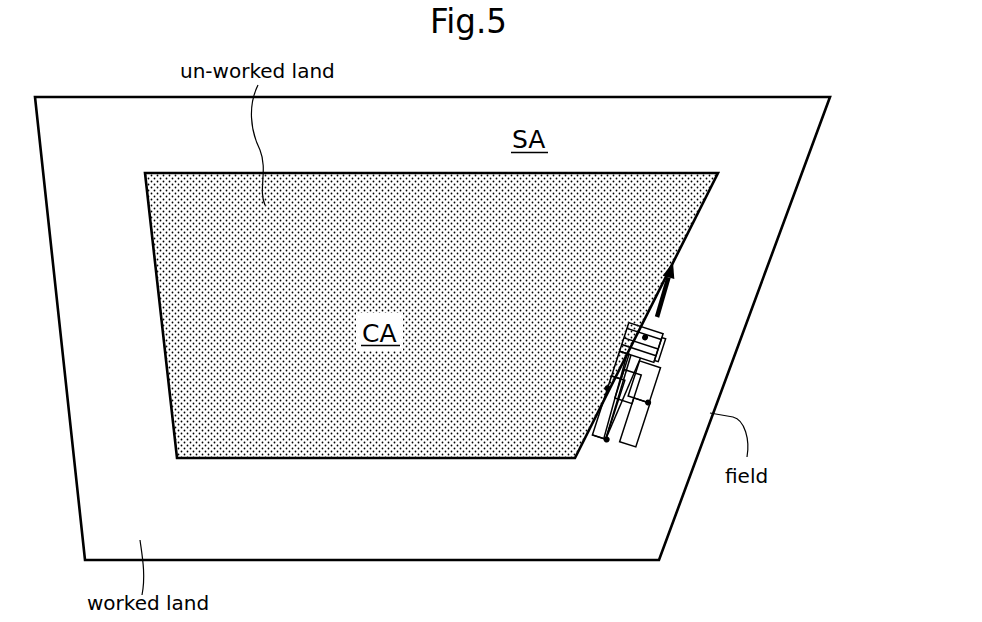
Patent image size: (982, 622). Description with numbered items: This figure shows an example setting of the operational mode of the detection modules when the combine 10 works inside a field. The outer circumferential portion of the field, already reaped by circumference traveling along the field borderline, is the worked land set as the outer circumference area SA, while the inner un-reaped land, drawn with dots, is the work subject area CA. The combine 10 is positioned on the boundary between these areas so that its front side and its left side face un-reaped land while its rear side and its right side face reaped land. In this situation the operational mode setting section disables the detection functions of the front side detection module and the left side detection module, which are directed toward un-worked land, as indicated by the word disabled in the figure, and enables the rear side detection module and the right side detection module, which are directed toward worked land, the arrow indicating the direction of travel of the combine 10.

The combine 10 is at (706, 411).